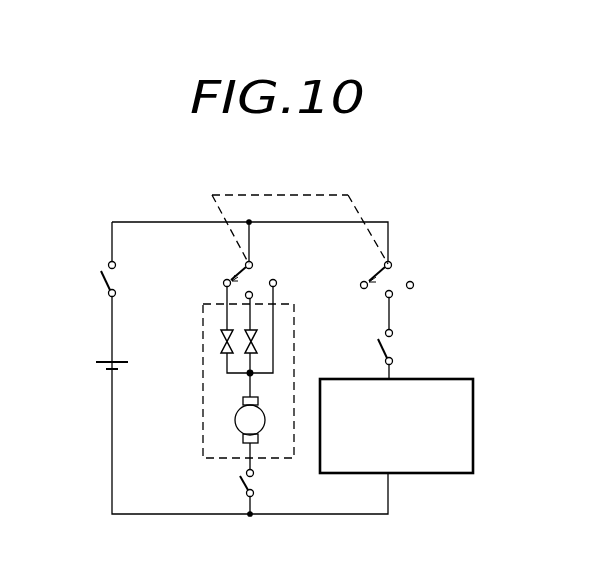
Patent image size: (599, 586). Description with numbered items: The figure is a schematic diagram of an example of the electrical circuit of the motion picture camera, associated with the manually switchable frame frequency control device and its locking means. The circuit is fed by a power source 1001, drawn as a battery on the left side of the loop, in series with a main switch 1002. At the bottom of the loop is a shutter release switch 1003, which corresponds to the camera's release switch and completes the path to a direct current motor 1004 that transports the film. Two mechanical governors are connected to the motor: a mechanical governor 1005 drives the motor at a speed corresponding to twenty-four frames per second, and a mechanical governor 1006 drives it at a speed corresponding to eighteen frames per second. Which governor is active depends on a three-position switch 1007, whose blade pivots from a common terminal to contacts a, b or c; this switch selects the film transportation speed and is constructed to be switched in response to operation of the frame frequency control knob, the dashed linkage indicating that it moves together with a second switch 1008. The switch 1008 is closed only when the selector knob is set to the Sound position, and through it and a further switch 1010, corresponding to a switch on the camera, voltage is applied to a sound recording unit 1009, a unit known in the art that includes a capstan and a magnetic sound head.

The power source 1001 is at (98, 366).
The main switch 1002 is at (104, 291).
The shutter release switch 1003 is at (262, 485).
The direct current motor 1004 is at (236, 420).
The mechanical governor 1005 is at (260, 340).
The mechanical governor 1006 is at (218, 340).
The three-position switch 1007 is at (270, 267).
The switch 1008 is at (395, 273).
The sound recording unit 1009 is at (458, 405).
The switch 1010 is at (395, 350).